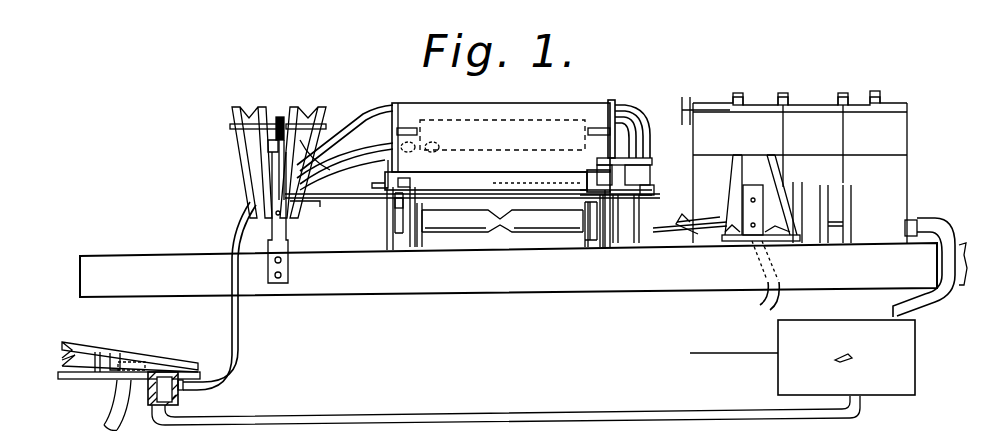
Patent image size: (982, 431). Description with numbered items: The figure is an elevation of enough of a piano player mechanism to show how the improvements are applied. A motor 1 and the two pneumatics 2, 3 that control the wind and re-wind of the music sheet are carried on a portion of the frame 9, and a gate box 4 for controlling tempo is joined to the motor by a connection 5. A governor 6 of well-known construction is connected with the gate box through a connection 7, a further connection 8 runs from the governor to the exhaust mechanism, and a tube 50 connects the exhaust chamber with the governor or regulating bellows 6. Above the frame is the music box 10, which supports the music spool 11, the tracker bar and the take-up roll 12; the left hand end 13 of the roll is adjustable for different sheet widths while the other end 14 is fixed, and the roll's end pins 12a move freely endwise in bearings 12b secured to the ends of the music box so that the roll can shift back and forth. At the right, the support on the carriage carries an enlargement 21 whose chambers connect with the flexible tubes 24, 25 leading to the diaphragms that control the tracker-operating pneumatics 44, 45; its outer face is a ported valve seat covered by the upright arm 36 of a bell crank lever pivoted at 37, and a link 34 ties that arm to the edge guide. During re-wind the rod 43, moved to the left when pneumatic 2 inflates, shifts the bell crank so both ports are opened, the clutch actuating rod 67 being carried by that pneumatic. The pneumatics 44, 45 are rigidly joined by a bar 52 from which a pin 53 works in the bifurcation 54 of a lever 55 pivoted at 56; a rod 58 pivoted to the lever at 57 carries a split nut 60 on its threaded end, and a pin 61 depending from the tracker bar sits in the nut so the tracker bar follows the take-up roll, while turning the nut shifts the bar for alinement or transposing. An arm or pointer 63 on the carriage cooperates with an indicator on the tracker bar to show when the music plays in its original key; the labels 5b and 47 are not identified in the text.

The motor 1 is at (882, 180).
The pneumatic 2 is at (736, 182).
The pneumatic 3 is at (778, 195).
The gate box 4 is at (802, 357).
The connection 5 is at (935, 228).
The post 5b is at (283, 115).
The governor 6 is at (135, 358).
The connection 7 is at (490, 418).
The connection 8 is at (116, 402).
The frame 9 is at (508, 270).
The music box 10 is at (610, 125).
The music spool 11 is at (507, 135).
The take-up roll 12 is at (457, 235).
The end supports or pins 12a is at (395, 245).
The bearings 12b is at (385, 242).
The left hand end 13 is at (410, 207).
The right hand end 14 is at (595, 232).
The enlargement 21 is at (655, 165).
The flexible tube 24 is at (648, 118).
The flexible tube 25 is at (625, 118).
The link 34 is at (630, 168).
The upright arm of bell crank lever 36 is at (666, 186).
The pivot 37 is at (585, 162).
The rod of re-wind mechanism 43 is at (680, 232).
The pneumatic 44 is at (310, 122).
The pneumatic 45 is at (250, 118).
The plate 47 is at (632, 238).
The tube 50 is at (240, 356).
The bar 52 is at (297, 120).
The pin 53 is at (277, 124).
The bifurcation 54 is at (275, 142).
The lever 55 is at (272, 160).
The pivot 56 is at (272, 232).
The pivotal connection 57 is at (292, 206).
The rod 58 is at (343, 203).
The split nut 60 is at (396, 207).
The pin 61 is at (372, 186).
The arm or pointer 63 is at (412, 181).
The clutch actuating rod 67 is at (698, 230).